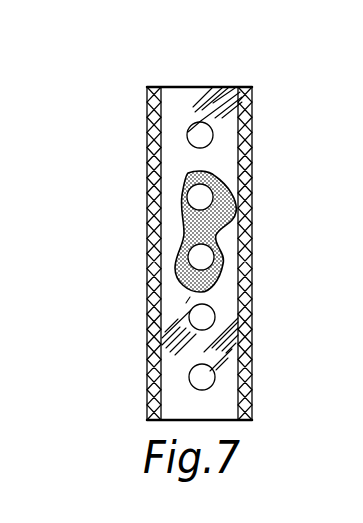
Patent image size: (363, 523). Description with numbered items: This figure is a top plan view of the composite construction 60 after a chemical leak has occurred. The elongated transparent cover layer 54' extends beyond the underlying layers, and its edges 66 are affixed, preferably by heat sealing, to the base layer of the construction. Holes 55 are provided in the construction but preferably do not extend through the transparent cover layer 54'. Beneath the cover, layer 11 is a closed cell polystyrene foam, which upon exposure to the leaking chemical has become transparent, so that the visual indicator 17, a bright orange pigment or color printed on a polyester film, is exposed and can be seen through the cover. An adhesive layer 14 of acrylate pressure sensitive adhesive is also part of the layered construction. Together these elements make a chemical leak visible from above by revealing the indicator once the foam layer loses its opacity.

The layer 11 is at (177, 102).
The transparent cover layer 54' is at (199, 66).
The holes 55 is at (185, 138).
The composite construction 60 is at (215, 228).
The visual indicator 17 is at (203, 225).
The adhesive layer 14 is at (218, 275).
The edges 66 is at (160, 322).